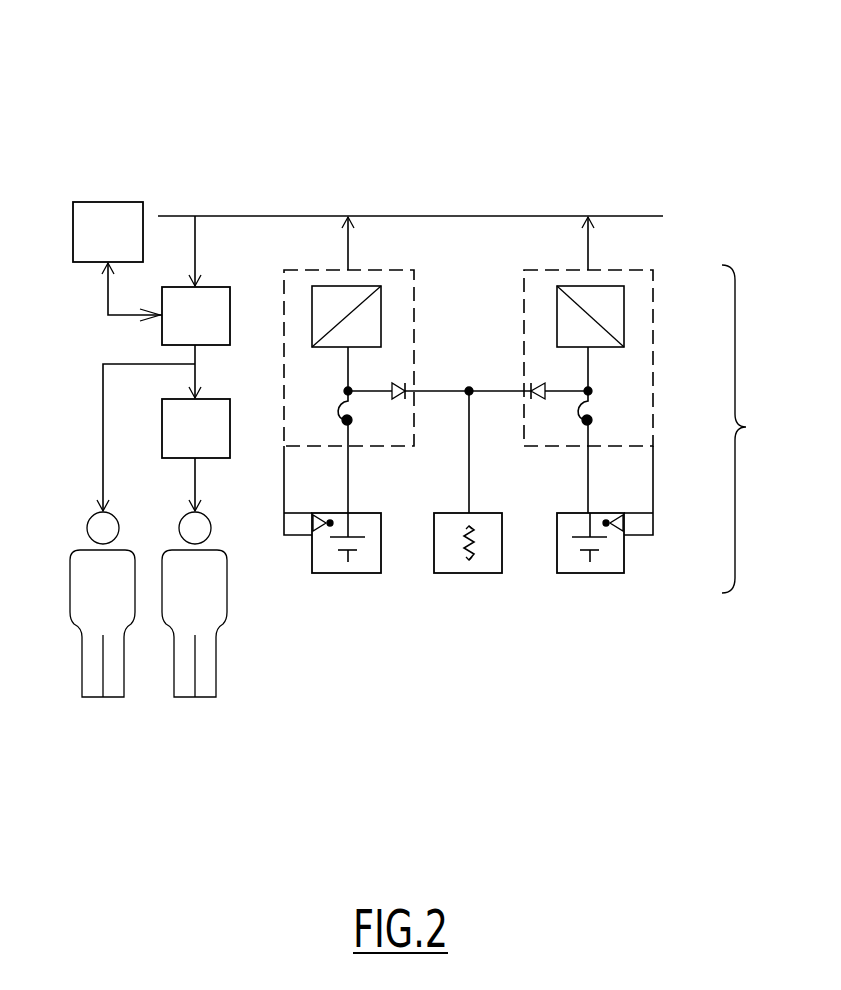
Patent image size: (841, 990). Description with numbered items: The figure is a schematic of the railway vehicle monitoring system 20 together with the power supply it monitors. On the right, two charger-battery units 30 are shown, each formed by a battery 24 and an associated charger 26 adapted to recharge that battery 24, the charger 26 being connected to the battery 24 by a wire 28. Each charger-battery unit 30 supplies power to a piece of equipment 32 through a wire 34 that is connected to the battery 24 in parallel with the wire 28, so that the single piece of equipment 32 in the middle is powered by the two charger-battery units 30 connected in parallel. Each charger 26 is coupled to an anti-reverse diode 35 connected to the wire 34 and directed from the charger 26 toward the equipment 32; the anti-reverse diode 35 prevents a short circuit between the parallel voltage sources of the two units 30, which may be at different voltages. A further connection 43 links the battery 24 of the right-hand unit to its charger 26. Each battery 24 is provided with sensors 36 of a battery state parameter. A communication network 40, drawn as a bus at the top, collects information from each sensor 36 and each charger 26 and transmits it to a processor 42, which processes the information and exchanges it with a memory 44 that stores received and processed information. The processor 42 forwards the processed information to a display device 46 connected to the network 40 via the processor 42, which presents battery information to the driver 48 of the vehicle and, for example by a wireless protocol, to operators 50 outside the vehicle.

The railway vehicle monitoring system 20 is at (100, 117).
The battery 24 is at (360, 565).
The charger 26 is at (414, 300).
The wire 28 is at (348, 490).
The charger-battery unit 30 is at (775, 443).
The piece of equipment 32 is at (476, 575).
The wire 34 is at (469, 475).
The anti-reverse diode 35 is at (405, 383).
The sensor 36 is at (352, 420).
The communication network 40 is at (267, 214).
The processor 42 is at (215, 298).
The connection line 43 is at (588, 487).
The memory 44 is at (96, 210).
The display device 46 is at (222, 422).
The driver 48 is at (207, 690).
The operator 50 is at (110, 690).